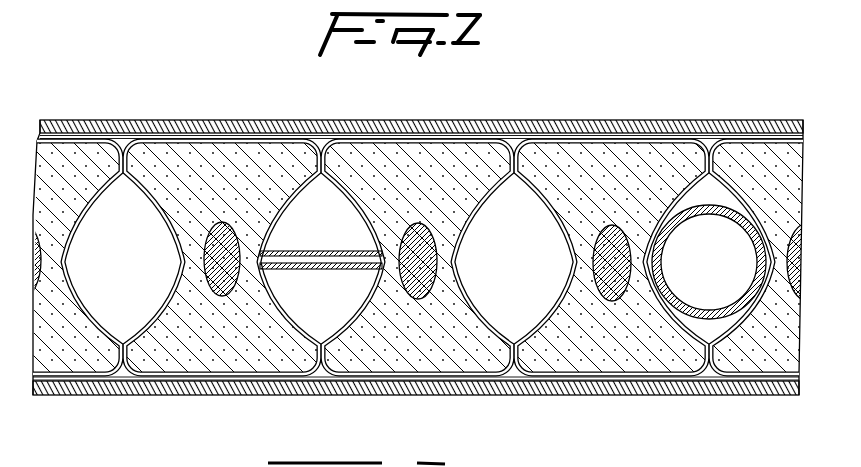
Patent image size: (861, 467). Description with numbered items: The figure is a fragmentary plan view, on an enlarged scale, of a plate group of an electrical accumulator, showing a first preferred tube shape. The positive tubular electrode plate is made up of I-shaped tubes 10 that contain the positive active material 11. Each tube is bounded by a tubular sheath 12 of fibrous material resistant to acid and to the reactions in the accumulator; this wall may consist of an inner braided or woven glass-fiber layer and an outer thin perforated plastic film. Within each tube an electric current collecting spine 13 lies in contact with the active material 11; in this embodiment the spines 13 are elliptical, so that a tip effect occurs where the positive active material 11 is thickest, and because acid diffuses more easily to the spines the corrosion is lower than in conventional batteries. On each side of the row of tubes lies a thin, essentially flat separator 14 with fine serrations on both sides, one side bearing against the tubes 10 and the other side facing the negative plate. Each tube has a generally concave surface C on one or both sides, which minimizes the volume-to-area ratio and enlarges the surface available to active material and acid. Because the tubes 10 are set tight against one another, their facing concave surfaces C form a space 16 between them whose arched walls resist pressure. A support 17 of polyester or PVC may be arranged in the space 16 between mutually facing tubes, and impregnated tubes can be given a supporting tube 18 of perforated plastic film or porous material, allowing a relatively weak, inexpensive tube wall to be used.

The I-shaped tube 10 is at (414, 252).
The positive active material 11 is at (184, 165).
The tubular sheath 12 is at (132, 140).
The electric current collecting spine 13 is at (220, 232).
The separator 14 is at (295, 132).
The space 16 is at (513, 233).
The support 17 is at (324, 250).
The supporting tube 18 is at (713, 203).
The concave surface C is at (65, 385).